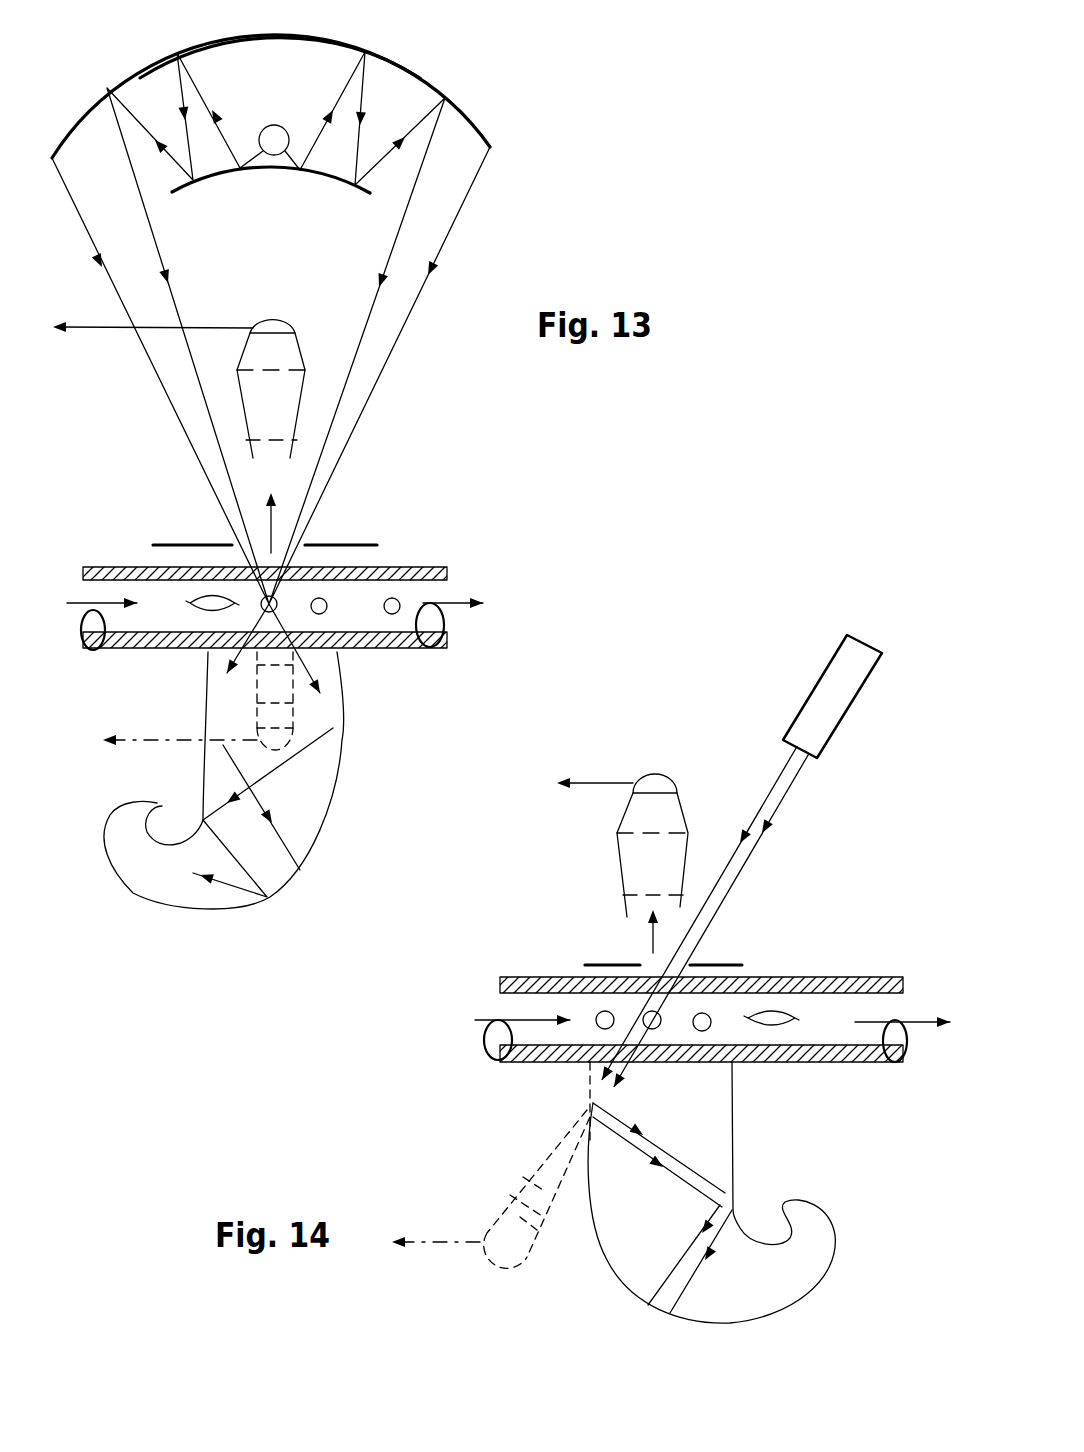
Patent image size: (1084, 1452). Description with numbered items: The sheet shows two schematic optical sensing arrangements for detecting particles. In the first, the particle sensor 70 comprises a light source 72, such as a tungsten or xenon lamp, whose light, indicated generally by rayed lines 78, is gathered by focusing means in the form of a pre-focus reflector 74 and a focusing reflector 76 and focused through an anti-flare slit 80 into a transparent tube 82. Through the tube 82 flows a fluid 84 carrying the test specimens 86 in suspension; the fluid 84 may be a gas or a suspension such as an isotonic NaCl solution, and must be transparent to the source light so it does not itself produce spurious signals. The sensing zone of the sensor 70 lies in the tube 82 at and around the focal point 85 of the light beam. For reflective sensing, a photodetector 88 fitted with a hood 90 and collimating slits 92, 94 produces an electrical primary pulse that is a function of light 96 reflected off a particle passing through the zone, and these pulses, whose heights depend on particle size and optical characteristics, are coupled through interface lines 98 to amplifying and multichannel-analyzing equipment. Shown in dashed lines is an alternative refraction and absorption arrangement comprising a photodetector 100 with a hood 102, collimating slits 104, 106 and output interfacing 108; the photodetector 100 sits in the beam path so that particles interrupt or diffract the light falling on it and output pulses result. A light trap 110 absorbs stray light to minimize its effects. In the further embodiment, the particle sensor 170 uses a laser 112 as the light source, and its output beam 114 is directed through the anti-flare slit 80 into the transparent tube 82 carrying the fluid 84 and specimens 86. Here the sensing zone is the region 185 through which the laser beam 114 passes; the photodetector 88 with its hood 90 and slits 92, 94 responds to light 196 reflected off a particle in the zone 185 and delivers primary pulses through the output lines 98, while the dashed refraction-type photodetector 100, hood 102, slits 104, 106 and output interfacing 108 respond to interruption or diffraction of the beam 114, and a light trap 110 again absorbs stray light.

In FIG. 13, the particle sensor 70 is at (468, 99).
In FIG. 13, the light source 72 is at (277, 125).
In FIG. 13, the pre-focus reflector 74 is at (257, 170).
In FIG. 13, the focusing reflector 76 is at (282, 33).
In FIG. 13, the rayed lines 78 is at (372, 400).
In FIG. 13, the anti-flare slit 80 is at (280, 550).
In FIG. 14, the anti-flare slit 80 is at (650, 960).
In FIG. 13, the transparent tube 82 is at (393, 567).
In FIG. 14, the transparent tube 82 is at (838, 977).
In FIG. 13, the fluid 84 is at (160, 598).
In FIG. 14, the fluid 84 is at (826, 1024).
In FIG. 13, the focal point 85 is at (293, 606).
In FIG. 13, the test specimens 86 is at (207, 610).
In FIG. 14, the test specimens 86 is at (760, 1024).
In FIG. 13, the photodetector 88 is at (278, 312).
In FIG. 14, the photodetector 88 is at (660, 773).
In FIG. 13, the hood 90 is at (297, 345).
In FIG. 14, the hood 90 is at (687, 853).
In FIG. 13, the collimating slit 92 is at (270, 440).
In FIG. 14, the collimating slit 92 is at (653, 893).
In FIG. 13, the collimating slit 94 is at (270, 372).
In FIG. 14, the collimating slit 94 is at (653, 833).
In FIG. 13, the reflected light 96 is at (258, 530).
In FIG. 13, the interface lines 98 is at (112, 328).
In FIG. 14, the interface lines 98 is at (600, 780).
In FIG. 13, the photodetector 100 is at (275, 752).
In FIG. 14, the photodetector 100 is at (500, 1267).
In FIG. 13, the hood 102 is at (295, 680).
In FIG. 14, the hood 102 is at (527, 1170).
In FIG. 13, the collimating slit 104 is at (272, 667).
In FIG. 14, the collimating slit 104 is at (540, 1192).
In FIG. 13, the collimating slit 106 is at (272, 707).
In FIG. 14, the collimating slit 106 is at (530, 1220).
In FIG. 13, the output interfacing 108 is at (187, 737).
In FIG. 14, the output interfacing 108 is at (440, 1245).
In FIG. 13, the light trap 110 is at (337, 805).
In FIG. 14, the light trap 110 is at (733, 1160).
In FIG. 14, the laser 112 is at (817, 680).
In FIG. 14, the laser beam 114 is at (780, 814).
In FIG. 14, the particle sensor 170 is at (740, 925).
In FIG. 14, the sensing zone 185 is at (646, 1036).
In FIG. 14, the reflected light 196 is at (650, 940).